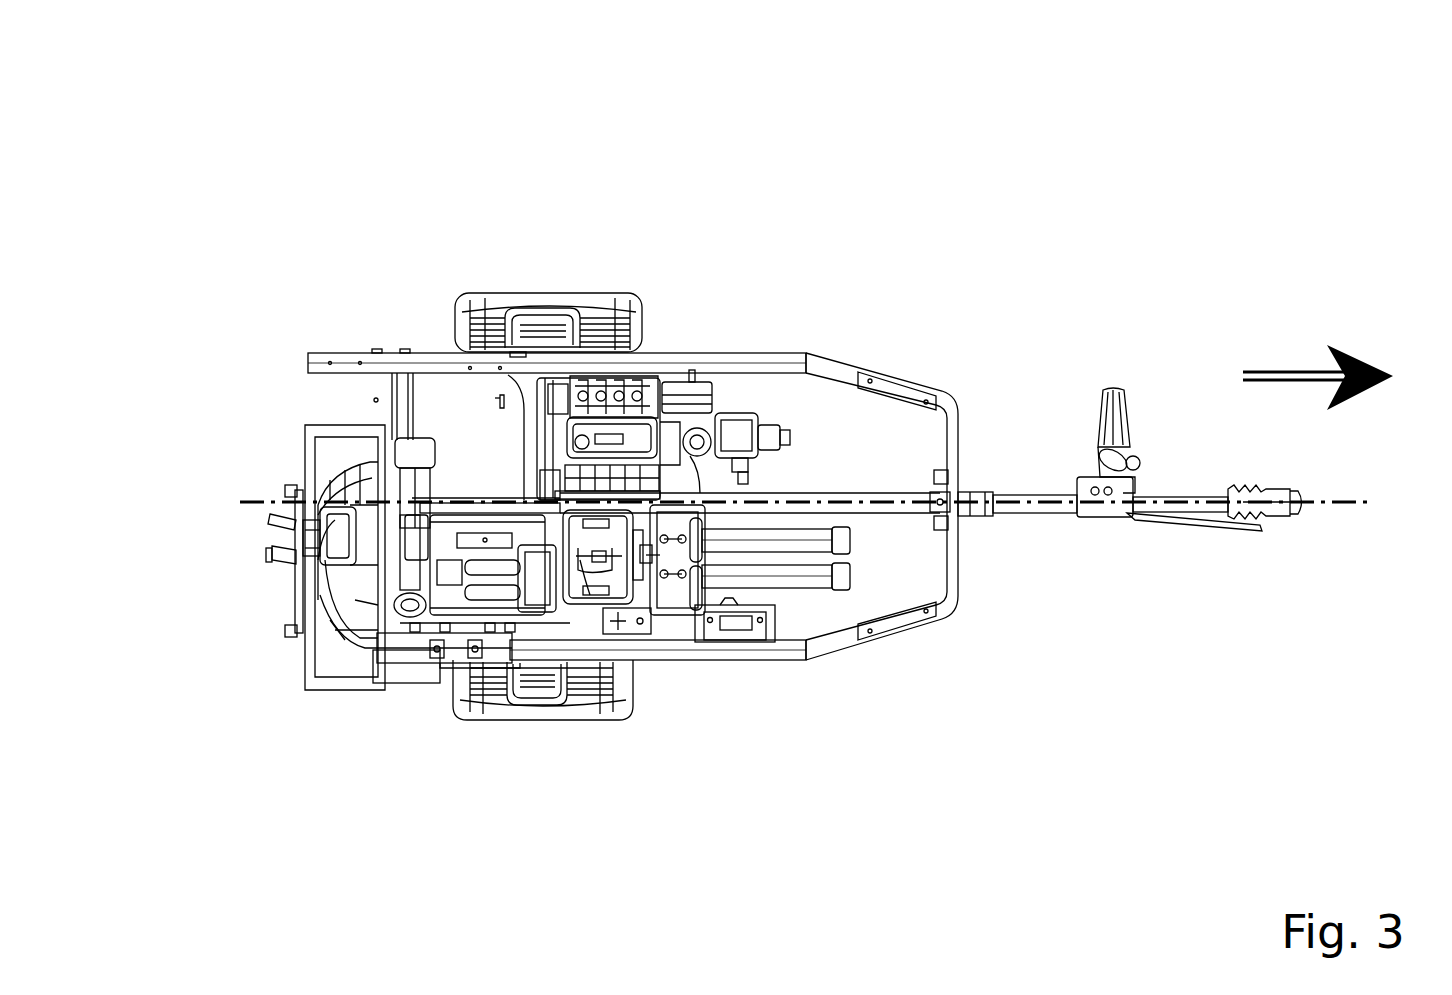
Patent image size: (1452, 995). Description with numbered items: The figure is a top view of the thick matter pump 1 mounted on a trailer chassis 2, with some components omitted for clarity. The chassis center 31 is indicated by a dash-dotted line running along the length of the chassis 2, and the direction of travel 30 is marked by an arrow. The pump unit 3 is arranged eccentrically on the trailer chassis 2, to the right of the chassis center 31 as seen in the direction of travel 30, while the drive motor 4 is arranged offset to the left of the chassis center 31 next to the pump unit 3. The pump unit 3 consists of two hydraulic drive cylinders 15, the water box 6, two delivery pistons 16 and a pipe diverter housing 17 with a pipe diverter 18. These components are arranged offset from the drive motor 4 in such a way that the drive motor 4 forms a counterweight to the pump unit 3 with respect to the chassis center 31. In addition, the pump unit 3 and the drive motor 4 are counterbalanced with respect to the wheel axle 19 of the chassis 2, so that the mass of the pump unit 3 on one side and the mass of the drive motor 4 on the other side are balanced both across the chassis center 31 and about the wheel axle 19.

The thick matter pump 1 is at (160, 126).
The trailer chassis 2 is at (457, 302).
The pump unit 3 is at (660, 593).
The drive motor 4 is at (625, 440).
The water box 6 is at (596, 590).
The hydraulic drive cylinders 15 is at (797, 540).
The delivery pistons 16 is at (460, 547).
The pipe diverter housing 17 is at (333, 630).
The pipe diverter 18 is at (343, 536).
The wheel axle 19 is at (548, 290).
The direction of travel 30 is at (1280, 370).
The chassis center 31 is at (1337, 507).